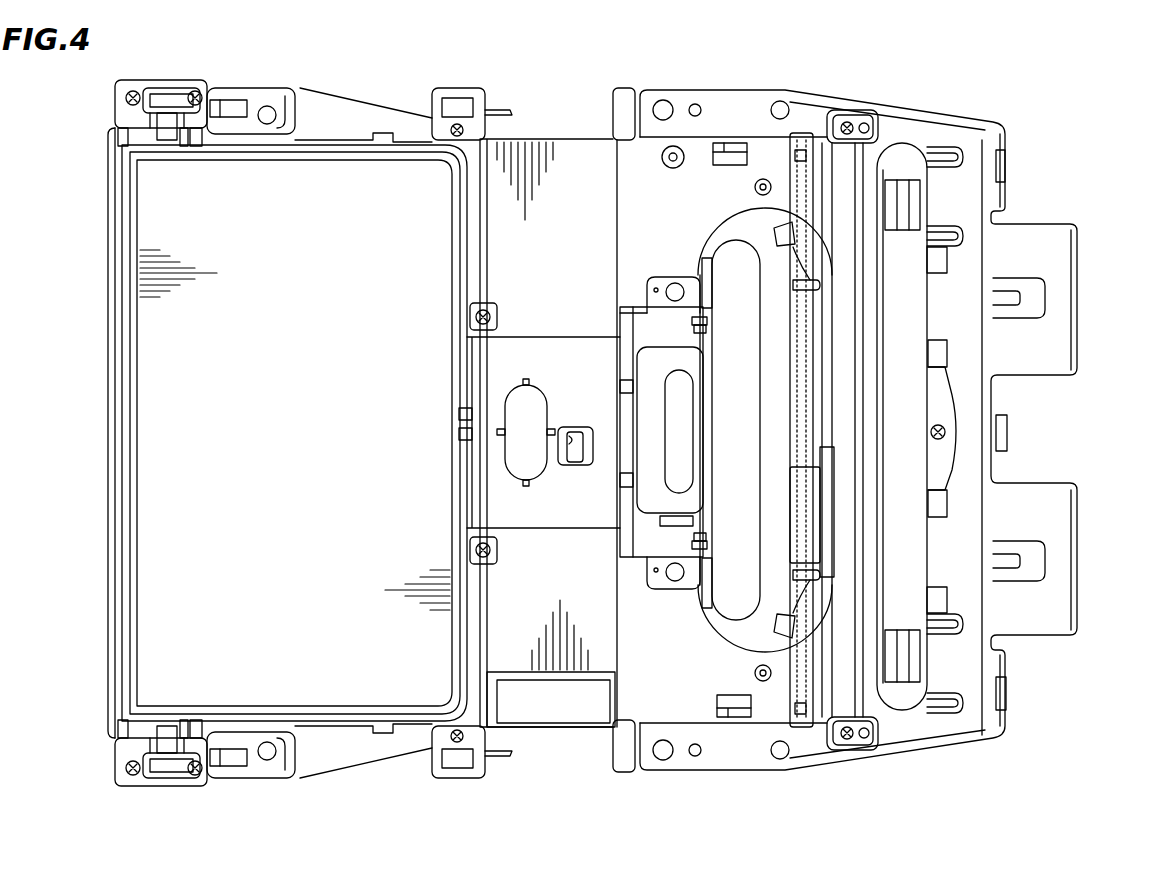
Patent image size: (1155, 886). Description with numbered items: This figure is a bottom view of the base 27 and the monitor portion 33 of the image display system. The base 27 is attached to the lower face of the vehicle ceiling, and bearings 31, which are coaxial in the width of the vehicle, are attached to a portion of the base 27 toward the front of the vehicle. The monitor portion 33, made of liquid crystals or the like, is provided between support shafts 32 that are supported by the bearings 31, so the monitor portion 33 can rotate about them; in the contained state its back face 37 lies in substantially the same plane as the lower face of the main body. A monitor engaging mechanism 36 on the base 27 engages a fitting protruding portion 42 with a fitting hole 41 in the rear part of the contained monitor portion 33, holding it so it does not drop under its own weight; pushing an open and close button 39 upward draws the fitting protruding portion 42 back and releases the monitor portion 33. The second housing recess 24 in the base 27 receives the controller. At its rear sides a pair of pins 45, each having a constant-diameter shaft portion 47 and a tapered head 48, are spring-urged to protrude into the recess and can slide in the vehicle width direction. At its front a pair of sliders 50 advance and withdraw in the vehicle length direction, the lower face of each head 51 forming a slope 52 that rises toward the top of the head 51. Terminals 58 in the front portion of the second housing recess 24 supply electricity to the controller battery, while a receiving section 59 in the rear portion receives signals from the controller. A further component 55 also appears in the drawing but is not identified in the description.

The second housing recess 24 is at (760, 410).
The base 27 is at (393, 112).
The bearings 31 is at (167, 102).
The support shafts 32 is at (167, 123).
The monitor portion 33 is at (328, 147).
The monitor engaging mechanism 36 is at (556, 337).
The back face 37 is at (182, 432).
The open and close button 39 is at (533, 396).
The fitting hole 41 is at (462, 412).
The fitting protruding portion 42 is at (458, 436).
The pins 45 is at (787, 226).
The shaft portion 47 is at (797, 240).
The head 48 is at (797, 247).
The sliders 50 is at (714, 327).
The head 51 is at (707, 332).
The slope 52 is at (712, 318).
The drive unit 55 is at (653, 358).
The terminals 58 is at (727, 258).
The receiving section 59 is at (800, 492).